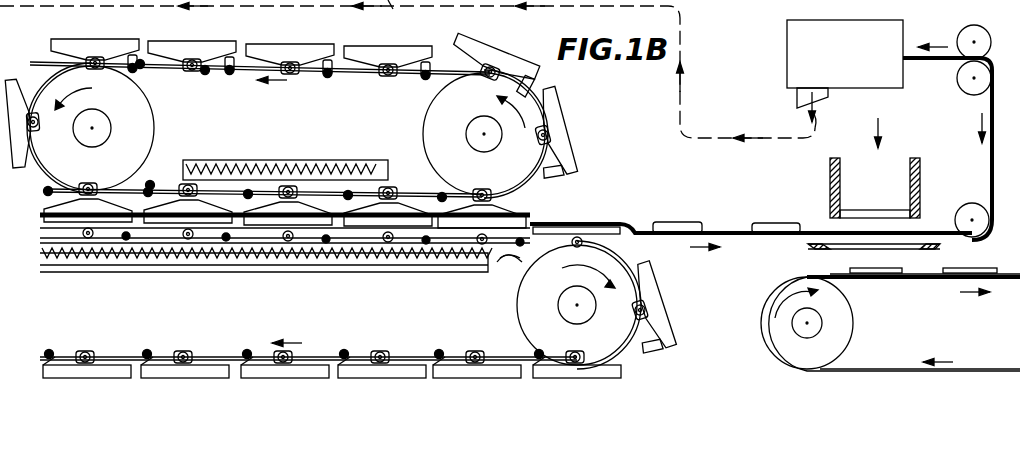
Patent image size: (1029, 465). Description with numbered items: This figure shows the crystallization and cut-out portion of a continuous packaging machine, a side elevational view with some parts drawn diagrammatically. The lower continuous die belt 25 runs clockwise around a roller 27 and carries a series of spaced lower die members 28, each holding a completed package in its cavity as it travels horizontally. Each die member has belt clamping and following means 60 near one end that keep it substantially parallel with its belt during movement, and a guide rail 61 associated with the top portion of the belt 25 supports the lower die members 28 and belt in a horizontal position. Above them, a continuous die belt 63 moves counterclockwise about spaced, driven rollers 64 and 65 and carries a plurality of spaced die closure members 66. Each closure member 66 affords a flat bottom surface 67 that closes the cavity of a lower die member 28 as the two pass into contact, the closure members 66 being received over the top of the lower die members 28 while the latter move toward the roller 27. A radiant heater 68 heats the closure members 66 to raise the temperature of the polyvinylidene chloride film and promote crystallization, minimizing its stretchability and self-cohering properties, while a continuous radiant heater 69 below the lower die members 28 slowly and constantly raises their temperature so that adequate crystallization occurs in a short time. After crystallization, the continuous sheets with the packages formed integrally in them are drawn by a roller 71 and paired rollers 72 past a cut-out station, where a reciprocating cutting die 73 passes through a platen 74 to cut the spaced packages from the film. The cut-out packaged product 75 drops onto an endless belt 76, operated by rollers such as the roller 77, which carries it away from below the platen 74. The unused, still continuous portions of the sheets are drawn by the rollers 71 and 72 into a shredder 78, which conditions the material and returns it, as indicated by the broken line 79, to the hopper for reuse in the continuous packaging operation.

The lower continuous die belt 25 is at (133, 358).
The roller 27 is at (525, 305).
The lower die members 28 is at (273, 218).
The belt clamping and following means 60 is at (142, 66).
The guide rail 61 is at (508, 268).
The continuous die belt 63 is at (205, 72).
The roller 64 is at (143, 126).
The roller 65 is at (440, 118).
The die closure members 66 is at (22, 82).
The flat bottom surface 67 is at (105, 38).
The radiant heater 68 is at (300, 160).
The continuous radiant heater 69 is at (340, 272).
The roller 71 is at (970, 206).
The paired rollers 72 is at (1005, 18).
The cutting die 73 is at (830, 167).
The platen 74 is at (936, 249).
The packaged product 75 is at (758, 222).
The endless belt 76 is at (925, 285).
The roller 77 is at (848, 320).
The shredder 78 is at (903, 25).
The broken line 79 is at (815, 130).